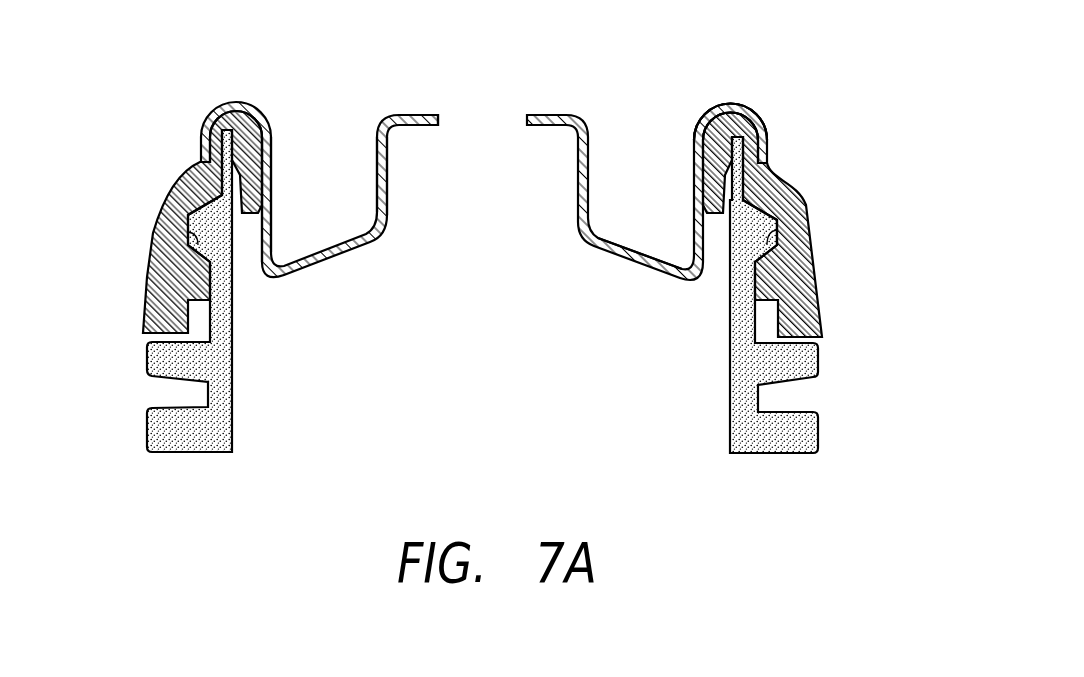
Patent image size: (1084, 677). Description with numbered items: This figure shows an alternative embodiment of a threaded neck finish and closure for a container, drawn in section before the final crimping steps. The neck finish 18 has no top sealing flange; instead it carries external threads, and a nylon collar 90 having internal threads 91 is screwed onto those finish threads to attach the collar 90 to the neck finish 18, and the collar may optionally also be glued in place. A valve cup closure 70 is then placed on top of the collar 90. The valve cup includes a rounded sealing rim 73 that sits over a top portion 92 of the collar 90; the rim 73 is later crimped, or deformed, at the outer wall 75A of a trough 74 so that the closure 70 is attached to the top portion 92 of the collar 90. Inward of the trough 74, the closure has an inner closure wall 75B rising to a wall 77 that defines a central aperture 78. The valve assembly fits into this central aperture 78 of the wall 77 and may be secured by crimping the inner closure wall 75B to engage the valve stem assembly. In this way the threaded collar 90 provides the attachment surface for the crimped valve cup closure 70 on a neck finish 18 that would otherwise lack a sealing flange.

The neck finish 18 is at (820, 428).
The closure 70 is at (760, 66).
The rounded sealing rim 73 is at (755, 106).
The trough 74 is at (663, 187).
The outer wall 75A is at (272, 203).
The inner closure wall 75B is at (377, 170).
The wall 77 is at (432, 114).
The central aperture 78 is at (525, 116).
The nylon collar 90 is at (805, 210).
The internal threads 91 is at (195, 252).
The top portion 92 is at (702, 112).